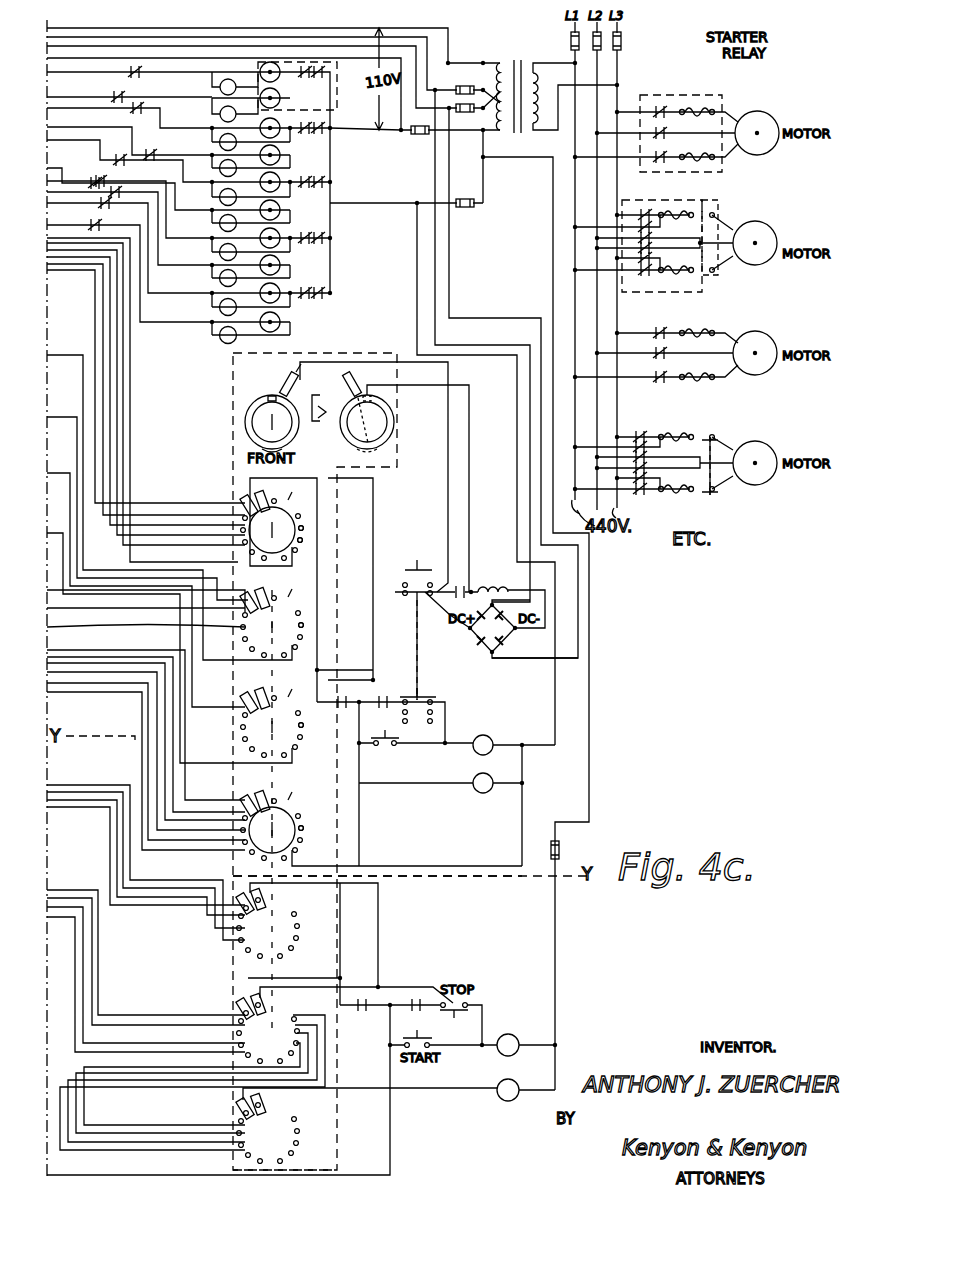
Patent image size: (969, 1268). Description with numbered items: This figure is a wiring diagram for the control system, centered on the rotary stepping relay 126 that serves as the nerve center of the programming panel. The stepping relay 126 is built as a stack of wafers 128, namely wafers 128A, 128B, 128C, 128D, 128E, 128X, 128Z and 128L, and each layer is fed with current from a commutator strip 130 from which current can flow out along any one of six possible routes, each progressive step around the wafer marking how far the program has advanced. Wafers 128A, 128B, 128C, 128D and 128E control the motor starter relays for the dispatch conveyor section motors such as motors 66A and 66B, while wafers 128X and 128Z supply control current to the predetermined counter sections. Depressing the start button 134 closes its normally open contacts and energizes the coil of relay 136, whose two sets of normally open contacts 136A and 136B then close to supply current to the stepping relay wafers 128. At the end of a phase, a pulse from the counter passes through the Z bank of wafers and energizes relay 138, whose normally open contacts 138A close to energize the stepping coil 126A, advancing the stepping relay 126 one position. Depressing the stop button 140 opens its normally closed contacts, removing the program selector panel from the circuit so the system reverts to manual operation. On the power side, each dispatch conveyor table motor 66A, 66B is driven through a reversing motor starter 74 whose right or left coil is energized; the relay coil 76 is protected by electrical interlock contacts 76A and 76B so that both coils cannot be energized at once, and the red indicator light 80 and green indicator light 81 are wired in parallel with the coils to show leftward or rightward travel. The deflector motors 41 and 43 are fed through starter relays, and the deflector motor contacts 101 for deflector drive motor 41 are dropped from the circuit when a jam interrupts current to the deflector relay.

The deflector drive motor 41 is at (758, 115).
The deflector motor 43 is at (768, 342).
The dispatch conveyor table motor 66A is at (774, 240).
The dispatch conveyor table motor 66B is at (774, 454).
The reversing motor starter 74 is at (713, 225).
The relay coil 76 is at (278, 80).
The electrical interlock contacts 76A is at (138, 76).
The electrical interlock contacts 76B is at (115, 96).
The red indicator light 80 is at (220, 87).
The green indicator light 81 is at (220, 114).
The deflector motor contacts 101 is at (672, 90).
The rotary stepping relay 126 is at (348, 806).
The stepping coil 126A is at (512, 572).
The stepping relay wafers 128 is at (248, 418).
The wafer 128A is at (258, 515).
The wafer 128B is at (309, 516).
The wafer 128C is at (245, 638).
The wafer 128D is at (300, 620).
The wafer 128E is at (250, 735).
The wafer 128X is at (288, 730).
The wafer 128Z is at (248, 812).
The wafer 128L is at (290, 832).
The commutator strip 130 is at (284, 388).
The start button 134 is at (383, 752).
The relay 136 is at (487, 740).
The normally open contacts 136A is at (342, 696).
The normally open contacts 136B is at (390, 692).
The relay 138 is at (482, 788).
The normally open contacts 138A is at (461, 579).
The stop button 140 is at (431, 537).